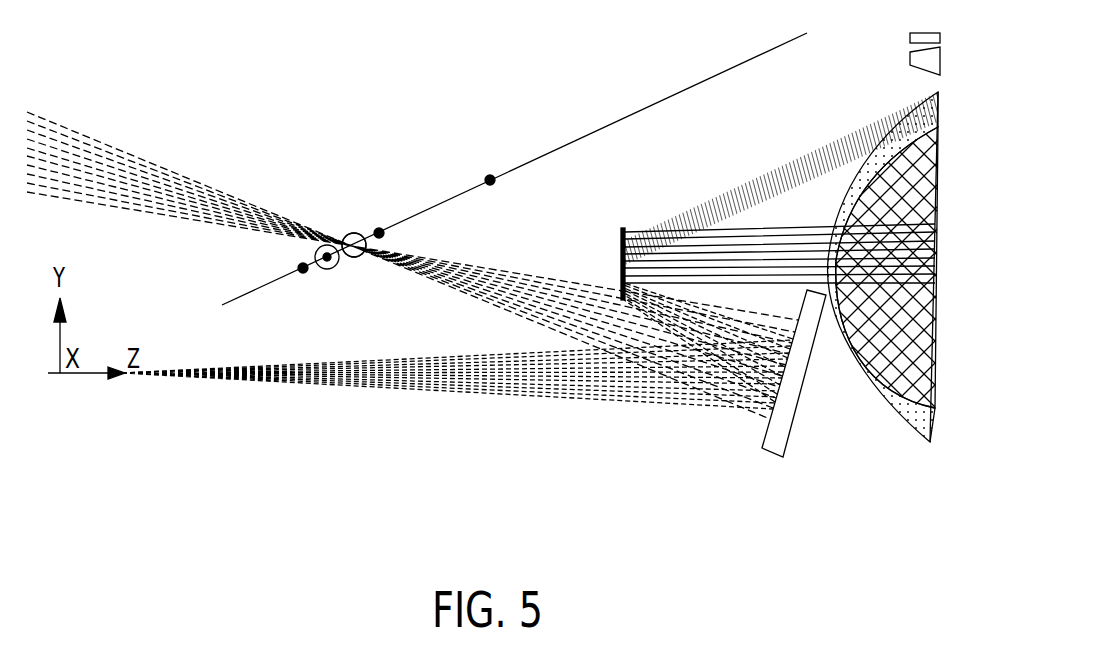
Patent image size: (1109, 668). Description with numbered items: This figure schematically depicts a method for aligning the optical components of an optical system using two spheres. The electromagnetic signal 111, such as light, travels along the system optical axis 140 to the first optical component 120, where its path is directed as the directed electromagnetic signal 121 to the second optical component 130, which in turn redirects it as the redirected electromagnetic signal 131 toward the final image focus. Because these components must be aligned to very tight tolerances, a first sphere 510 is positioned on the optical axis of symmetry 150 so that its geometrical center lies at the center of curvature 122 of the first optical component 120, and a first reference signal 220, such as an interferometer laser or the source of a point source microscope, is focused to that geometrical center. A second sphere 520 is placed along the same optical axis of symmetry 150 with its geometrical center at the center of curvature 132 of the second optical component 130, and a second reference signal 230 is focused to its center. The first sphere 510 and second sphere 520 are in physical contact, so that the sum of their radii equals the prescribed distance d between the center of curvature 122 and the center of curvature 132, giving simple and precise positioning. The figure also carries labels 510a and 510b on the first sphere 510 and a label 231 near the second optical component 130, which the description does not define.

The electromagnetic signal 111 is at (447, 356).
The first optical component 120 is at (775, 457).
The directed electromagnetic signal 121 is at (720, 300).
The center of curvature 122 is at (346, 236).
The second optical component 130 is at (622, 228).
The redirected electromagnetic signal 131 is at (848, 144).
The center of curvature 132 is at (331, 269).
The system optical axis 140 is at (472, 385).
The optical axis of symmetry 150 is at (578, 140).
The first reference signal 220 is at (521, 270).
The second reference signal 230 is at (810, 222).
The eye pupil region 231 is at (887, 305).
The first sphere 510 is at (379, 248).
The first lens surface 510a is at (354, 233).
The second lens surface 510b is at (360, 258).
The second sphere 520 is at (322, 268).